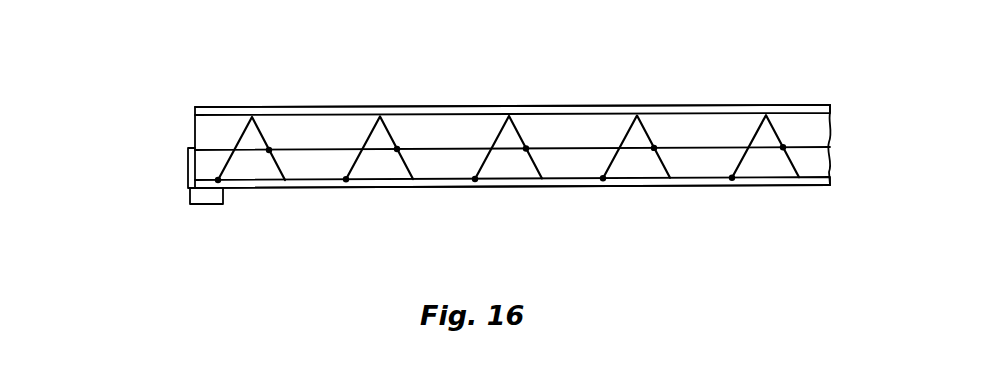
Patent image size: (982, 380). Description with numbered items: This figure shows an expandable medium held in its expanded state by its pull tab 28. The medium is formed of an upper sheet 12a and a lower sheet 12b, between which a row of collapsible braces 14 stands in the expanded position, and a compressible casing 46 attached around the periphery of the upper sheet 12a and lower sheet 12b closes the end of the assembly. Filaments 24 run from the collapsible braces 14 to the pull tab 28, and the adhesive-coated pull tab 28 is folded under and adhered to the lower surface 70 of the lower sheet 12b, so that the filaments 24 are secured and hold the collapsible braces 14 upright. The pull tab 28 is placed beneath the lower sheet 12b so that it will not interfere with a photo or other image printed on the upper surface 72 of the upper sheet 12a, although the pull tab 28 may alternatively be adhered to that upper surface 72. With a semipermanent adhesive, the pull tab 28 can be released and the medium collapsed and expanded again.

The upper sheet 12a is at (195, 111).
The lower sheet 12b is at (442, 183).
The collapsible brace 14 is at (263, 123).
The filament 24 is at (188, 165).
The pull tab 28 is at (208, 195).
The compressible casing 46 is at (832, 153).
The lower surface of the lower sheet 70 is at (260, 189).
The upper surface of the upper sheet 72 is at (302, 107).